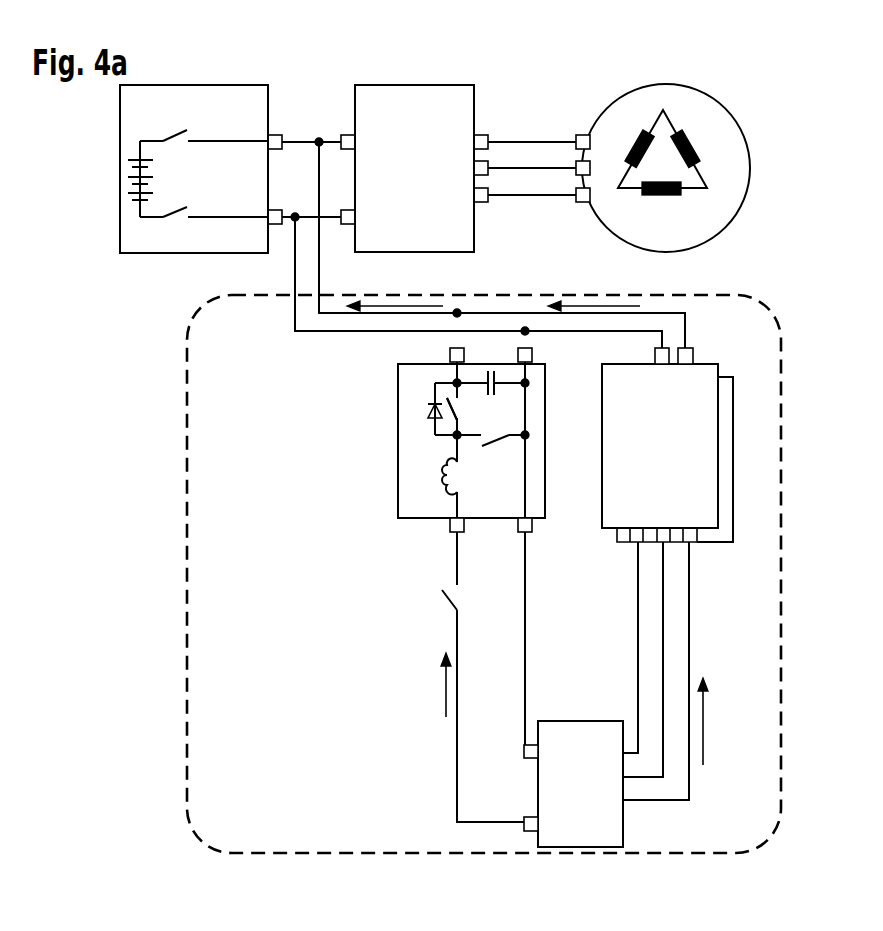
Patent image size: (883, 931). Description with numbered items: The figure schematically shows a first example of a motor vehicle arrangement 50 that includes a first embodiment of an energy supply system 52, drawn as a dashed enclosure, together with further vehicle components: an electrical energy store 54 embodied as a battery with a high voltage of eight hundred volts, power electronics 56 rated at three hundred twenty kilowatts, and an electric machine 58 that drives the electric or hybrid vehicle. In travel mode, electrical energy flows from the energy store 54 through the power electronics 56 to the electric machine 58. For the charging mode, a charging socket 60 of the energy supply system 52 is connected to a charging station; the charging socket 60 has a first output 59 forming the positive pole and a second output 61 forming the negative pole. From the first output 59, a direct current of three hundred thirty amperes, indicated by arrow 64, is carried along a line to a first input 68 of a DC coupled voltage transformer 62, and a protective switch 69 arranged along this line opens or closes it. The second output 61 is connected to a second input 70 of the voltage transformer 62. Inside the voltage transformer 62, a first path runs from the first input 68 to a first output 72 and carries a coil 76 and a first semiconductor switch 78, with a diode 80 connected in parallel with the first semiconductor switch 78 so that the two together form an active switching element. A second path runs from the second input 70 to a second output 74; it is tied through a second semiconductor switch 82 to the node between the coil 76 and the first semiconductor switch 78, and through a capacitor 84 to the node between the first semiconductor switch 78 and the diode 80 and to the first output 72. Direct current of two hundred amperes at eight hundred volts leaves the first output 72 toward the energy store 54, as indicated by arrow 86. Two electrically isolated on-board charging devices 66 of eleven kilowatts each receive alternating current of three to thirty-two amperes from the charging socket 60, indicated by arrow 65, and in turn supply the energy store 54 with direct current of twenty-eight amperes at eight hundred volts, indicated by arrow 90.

The motor vehicle arrangement 50 is at (148, 544).
The energy supply system 52 is at (772, 318).
The electrical energy store 54 is at (137, 253).
The power electronics 56 is at (435, 253).
The electric machine 58 is at (735, 222).
The first output 59 is at (524, 822).
The charging socket 60 is at (623, 818).
The second output 61 is at (524, 750).
The voltage transformer 62 is at (398, 493).
The arrow 64 is at (445, 692).
The arrow 65 is at (703, 718).
The charging devices 66 is at (596, 525).
The first input 68 is at (450, 526).
The protective switch 69 is at (428, 600).
The second input 70 is at (521, 532).
The first output 72 is at (450, 353).
The second output 74 is at (533, 355).
The coil 76 is at (458, 480).
The first semiconductor switch 78 is at (462, 407).
The diode 80 is at (428, 410).
The second semiconductor switch 82 is at (488, 443).
The capacitor 84 is at (493, 346).
The arrow 86 is at (395, 307).
The arrow 90 is at (587, 307).